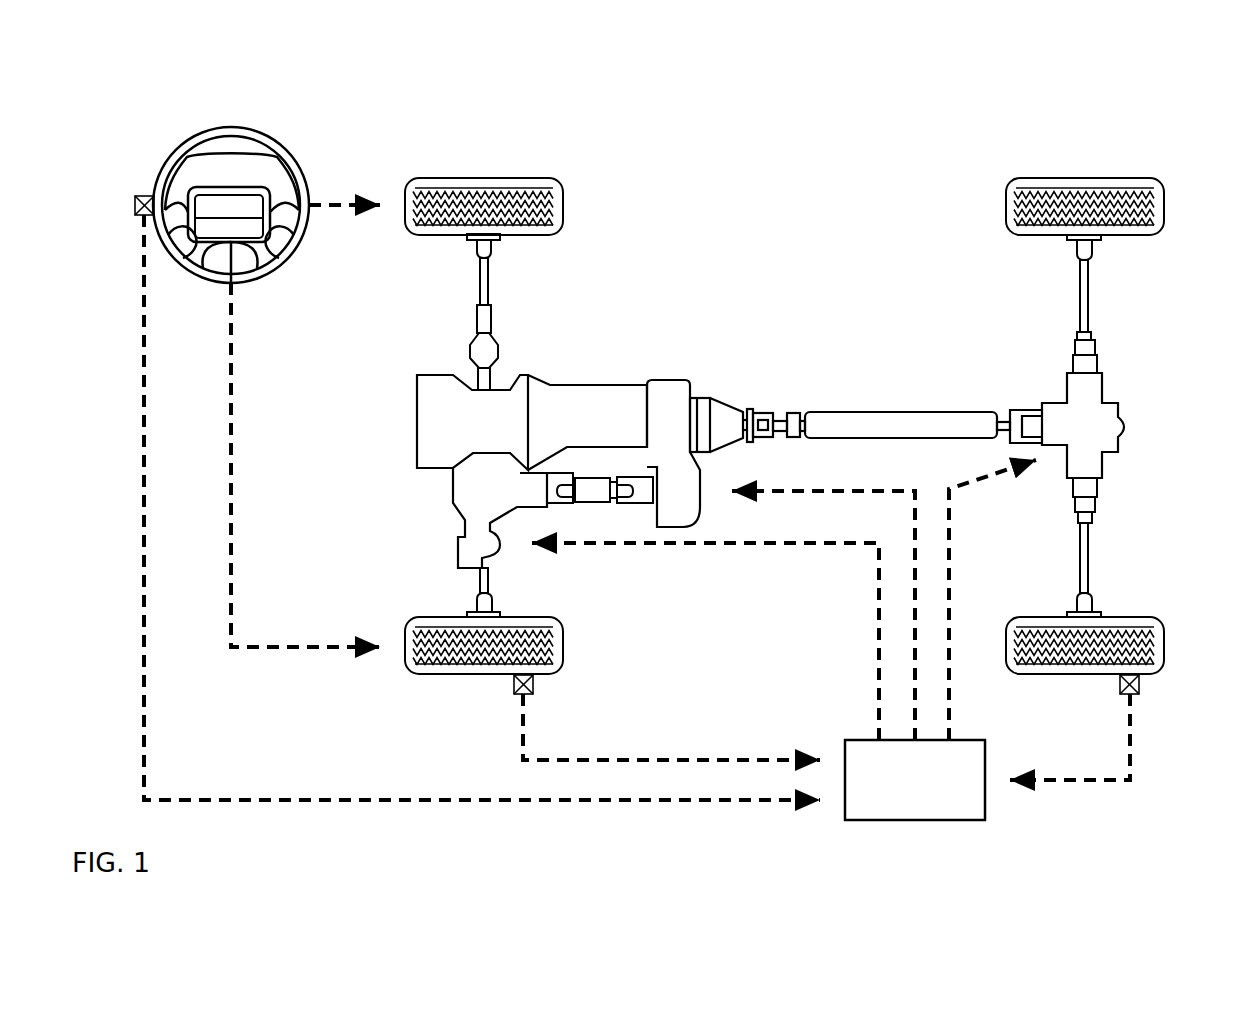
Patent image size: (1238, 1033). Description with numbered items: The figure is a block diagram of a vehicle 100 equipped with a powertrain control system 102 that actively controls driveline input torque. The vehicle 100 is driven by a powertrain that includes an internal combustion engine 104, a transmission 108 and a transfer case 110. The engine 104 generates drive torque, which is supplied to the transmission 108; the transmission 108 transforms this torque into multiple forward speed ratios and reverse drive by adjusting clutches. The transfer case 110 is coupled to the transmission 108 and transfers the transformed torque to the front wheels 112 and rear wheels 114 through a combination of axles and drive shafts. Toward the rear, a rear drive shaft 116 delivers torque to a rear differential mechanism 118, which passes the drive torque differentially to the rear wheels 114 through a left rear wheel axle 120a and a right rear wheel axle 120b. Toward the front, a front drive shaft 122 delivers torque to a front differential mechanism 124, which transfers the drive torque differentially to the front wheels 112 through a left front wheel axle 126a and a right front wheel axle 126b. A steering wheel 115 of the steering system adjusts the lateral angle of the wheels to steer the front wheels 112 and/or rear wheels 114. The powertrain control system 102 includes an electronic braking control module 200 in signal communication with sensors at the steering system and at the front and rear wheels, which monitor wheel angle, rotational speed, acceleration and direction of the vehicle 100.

The vehicle 100 is at (350, 100).
The powertrain control system 102 is at (1018, 808).
The internal combustion engine 104 is at (413, 382).
The transmission 108 is at (595, 383).
The transfer case 110 is at (668, 380).
The front wheels 112 is at (470, 168).
The rear wheels 114 is at (1105, 168).
The steering wheel 115 is at (278, 272).
The rear drive shaft 116 is at (900, 410).
The rear differential mechanism 118 is at (1127, 428).
The left rear wheel axle 120a is at (1094, 517).
The right rear wheel axle 120b is at (1097, 333).
The front drive shaft 122 is at (598, 498).
The front differential mechanism 124 is at (455, 518).
The left front wheel axle 126a is at (472, 605).
The right front wheel axle 126b is at (477, 278).
The electronic braking control module 200 is at (893, 797).